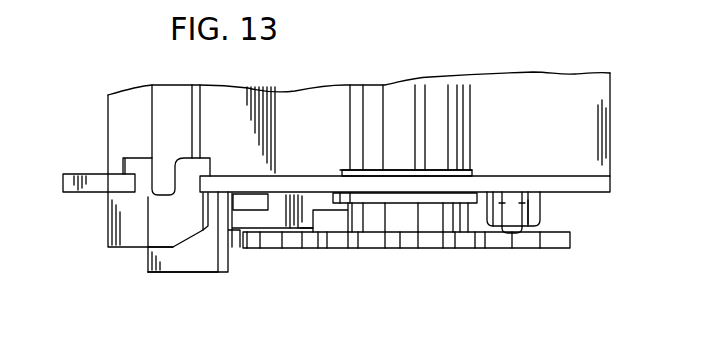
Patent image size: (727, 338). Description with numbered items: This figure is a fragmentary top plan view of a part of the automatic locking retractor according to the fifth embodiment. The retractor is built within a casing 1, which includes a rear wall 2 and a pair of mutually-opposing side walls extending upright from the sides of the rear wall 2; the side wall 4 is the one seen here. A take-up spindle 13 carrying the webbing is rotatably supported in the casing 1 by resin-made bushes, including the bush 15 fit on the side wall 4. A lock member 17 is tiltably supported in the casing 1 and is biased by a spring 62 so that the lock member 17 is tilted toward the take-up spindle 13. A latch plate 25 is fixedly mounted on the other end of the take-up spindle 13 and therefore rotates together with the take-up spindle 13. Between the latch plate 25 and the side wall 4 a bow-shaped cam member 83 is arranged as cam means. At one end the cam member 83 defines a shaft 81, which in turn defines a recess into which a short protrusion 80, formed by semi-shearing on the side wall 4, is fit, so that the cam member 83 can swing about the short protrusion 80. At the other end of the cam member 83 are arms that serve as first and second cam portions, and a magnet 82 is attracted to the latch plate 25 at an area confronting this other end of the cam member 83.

The casing 1 is at (103, 124).
The rear wall 2 is at (564, 108).
The side wall 4 is at (590, 186).
The take-up spindle 13 is at (440, 113).
The bush 15 is at (478, 170).
The lock member 17 is at (190, 258).
The latch plate 25 is at (322, 249).
The spring 62 is at (120, 222).
The short protrusion 80 is at (513, 190).
The shaft 81 is at (531, 212).
The magnet 82 is at (237, 233).
The cam member 83 is at (297, 190).